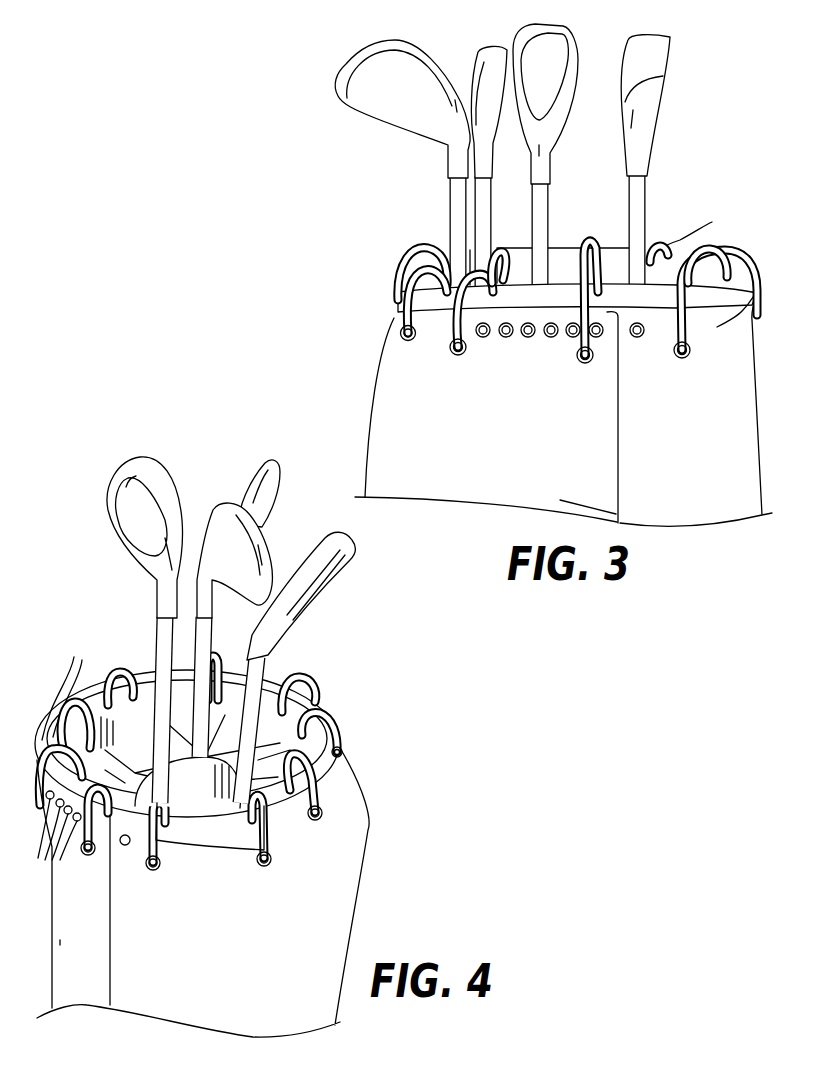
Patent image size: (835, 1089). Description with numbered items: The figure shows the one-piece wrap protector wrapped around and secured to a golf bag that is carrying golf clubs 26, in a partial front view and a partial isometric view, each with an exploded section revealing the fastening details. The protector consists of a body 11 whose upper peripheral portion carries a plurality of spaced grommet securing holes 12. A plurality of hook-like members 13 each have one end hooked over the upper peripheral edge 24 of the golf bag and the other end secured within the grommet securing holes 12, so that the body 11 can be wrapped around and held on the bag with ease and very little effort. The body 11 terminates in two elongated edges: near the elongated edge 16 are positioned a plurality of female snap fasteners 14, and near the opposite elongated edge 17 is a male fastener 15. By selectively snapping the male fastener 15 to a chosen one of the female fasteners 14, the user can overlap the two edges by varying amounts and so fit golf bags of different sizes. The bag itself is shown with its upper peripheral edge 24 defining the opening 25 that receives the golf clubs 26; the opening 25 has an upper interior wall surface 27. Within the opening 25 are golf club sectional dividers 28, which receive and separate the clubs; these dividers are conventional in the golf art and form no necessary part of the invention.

In FIG. 3, the body 11 is at (727, 393).
In FIG. 4, the body 11 is at (345, 928).
In FIG. 3, the spaced grommet securing holes 12 is at (452, 357).
In FIG. 4, the spaced grommet securing holes 12 is at (338, 758).
In FIG. 3, the hook-like members 13 is at (408, 258).
In FIG. 4, the hook-like members 13 is at (106, 674).
In FIG. 3, the female snap fasteners 14 is at (483, 338).
In FIG. 4, the female snap fasteners 14 is at (85, 827).
In FIG. 3, the male fastener 15 is at (637, 338).
In FIG. 4, the male fastener 15 is at (125, 846).
In FIG. 3, the elongated edge 16 is at (616, 474).
In FIG. 4, the elongated edge 16 is at (108, 986).
In FIG. 3, the elongated edge 17 is at (620, 455).
In FIG. 4, the elongated edge 17 is at (112, 968).
In FIG. 4, the upper peripheral edge 24 is at (214, 828).
In FIG. 3, the opening 25 is at (516, 270).
In FIG. 4, the opening 25 is at (201, 797).
In FIG. 3, the golf clubs 26 is at (490, 49).
In FIG. 4, the golf clubs 26 is at (176, 498).
In FIG. 3, the upper interior wall surface 27 is at (574, 272).
In FIG. 4, the upper interior wall surface 27 is at (113, 744).
In FIG. 4, the golf club sectional dividers 28 is at (125, 760).